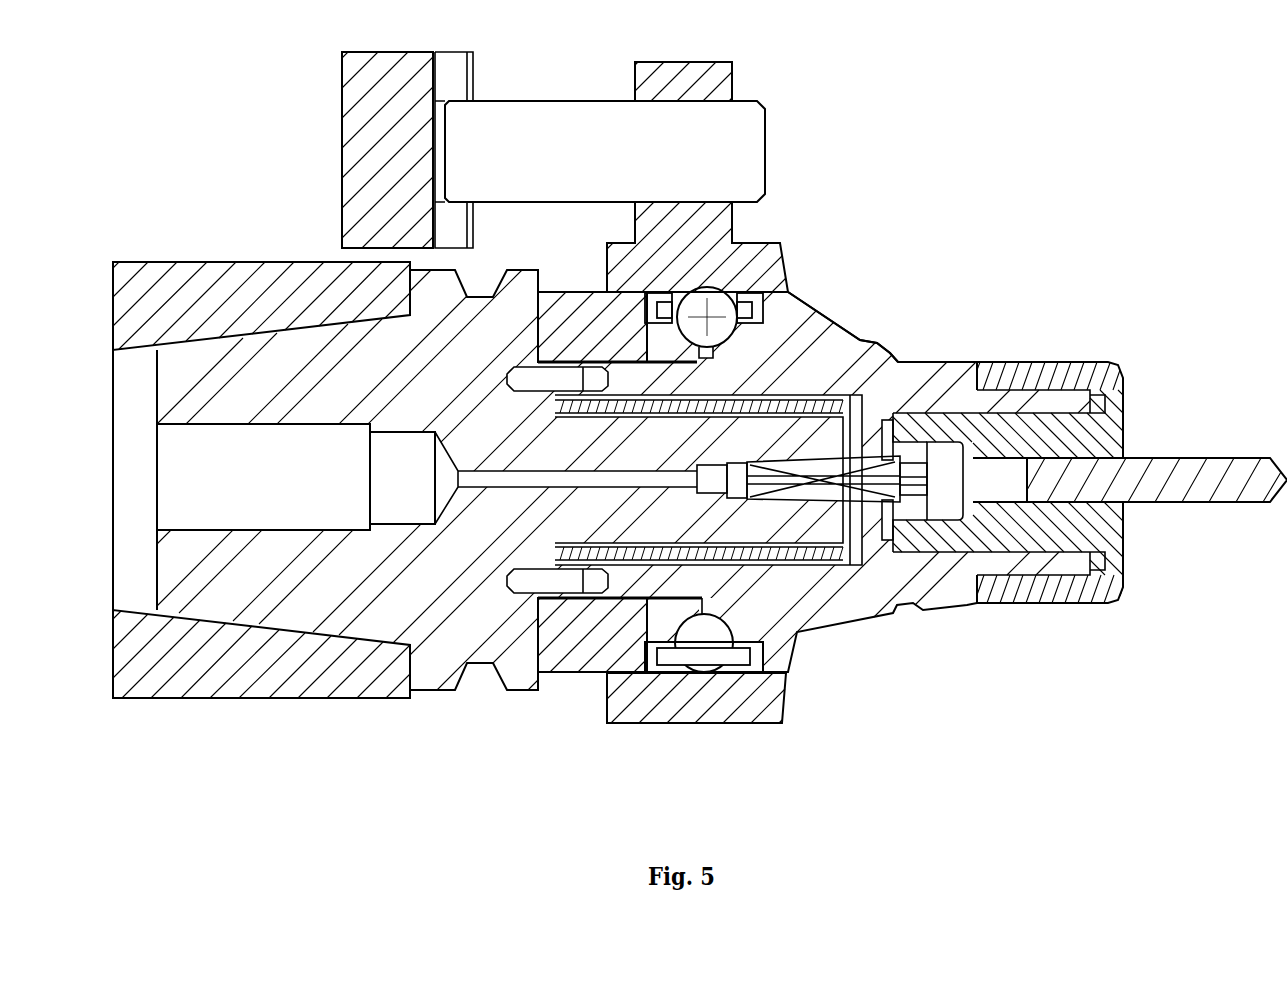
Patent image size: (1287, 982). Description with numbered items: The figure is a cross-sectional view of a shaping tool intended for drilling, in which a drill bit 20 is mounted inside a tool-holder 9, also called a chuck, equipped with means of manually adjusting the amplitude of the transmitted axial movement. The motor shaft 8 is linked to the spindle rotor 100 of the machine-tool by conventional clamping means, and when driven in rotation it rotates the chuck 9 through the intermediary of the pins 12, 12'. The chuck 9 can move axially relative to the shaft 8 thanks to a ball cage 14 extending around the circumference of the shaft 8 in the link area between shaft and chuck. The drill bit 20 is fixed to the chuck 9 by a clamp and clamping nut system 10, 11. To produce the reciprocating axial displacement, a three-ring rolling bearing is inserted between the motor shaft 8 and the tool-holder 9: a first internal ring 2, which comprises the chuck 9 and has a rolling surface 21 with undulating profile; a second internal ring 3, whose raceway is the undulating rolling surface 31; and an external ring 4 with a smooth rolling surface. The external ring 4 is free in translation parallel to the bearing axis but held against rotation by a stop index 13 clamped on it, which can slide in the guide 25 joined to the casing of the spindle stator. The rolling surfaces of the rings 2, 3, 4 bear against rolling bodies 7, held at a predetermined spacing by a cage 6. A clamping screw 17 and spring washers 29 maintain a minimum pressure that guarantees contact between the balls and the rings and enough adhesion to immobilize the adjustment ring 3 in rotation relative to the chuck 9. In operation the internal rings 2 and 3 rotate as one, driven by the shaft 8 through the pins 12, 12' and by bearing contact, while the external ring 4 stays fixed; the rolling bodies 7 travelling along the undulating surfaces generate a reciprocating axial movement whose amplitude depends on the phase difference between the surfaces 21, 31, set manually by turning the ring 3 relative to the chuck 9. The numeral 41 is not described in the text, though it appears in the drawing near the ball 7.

The first internal ring 2 is at (862, 362).
The second internal ring 3 is at (573, 633).
The external ring 4 is at (713, 222).
The cage 6 is at (708, 650).
The rolling bodies 7 is at (737, 293).
The motor shaft 8 is at (248, 573).
The tool-holder 9 is at (970, 362).
The clamp 10 is at (1082, 588).
The clamping nut 11 is at (1032, 440).
The pin 12 is at (385, 251).
The pin 12' is at (504, 670).
The stop index 13 is at (722, 135).
The ball cage 14 is at (838, 335).
The clamping screw 17 is at (1061, 362).
The drill bit 20 is at (1162, 478).
The rolling surface 21 is at (713, 677).
The guide 25 is at (372, 103).
The spring washers 29 is at (1057, 362).
The rolling surface 31 is at (682, 623).
The ball 41 is at (707, 317).
The spindle rotor 100 is at (303, 683).